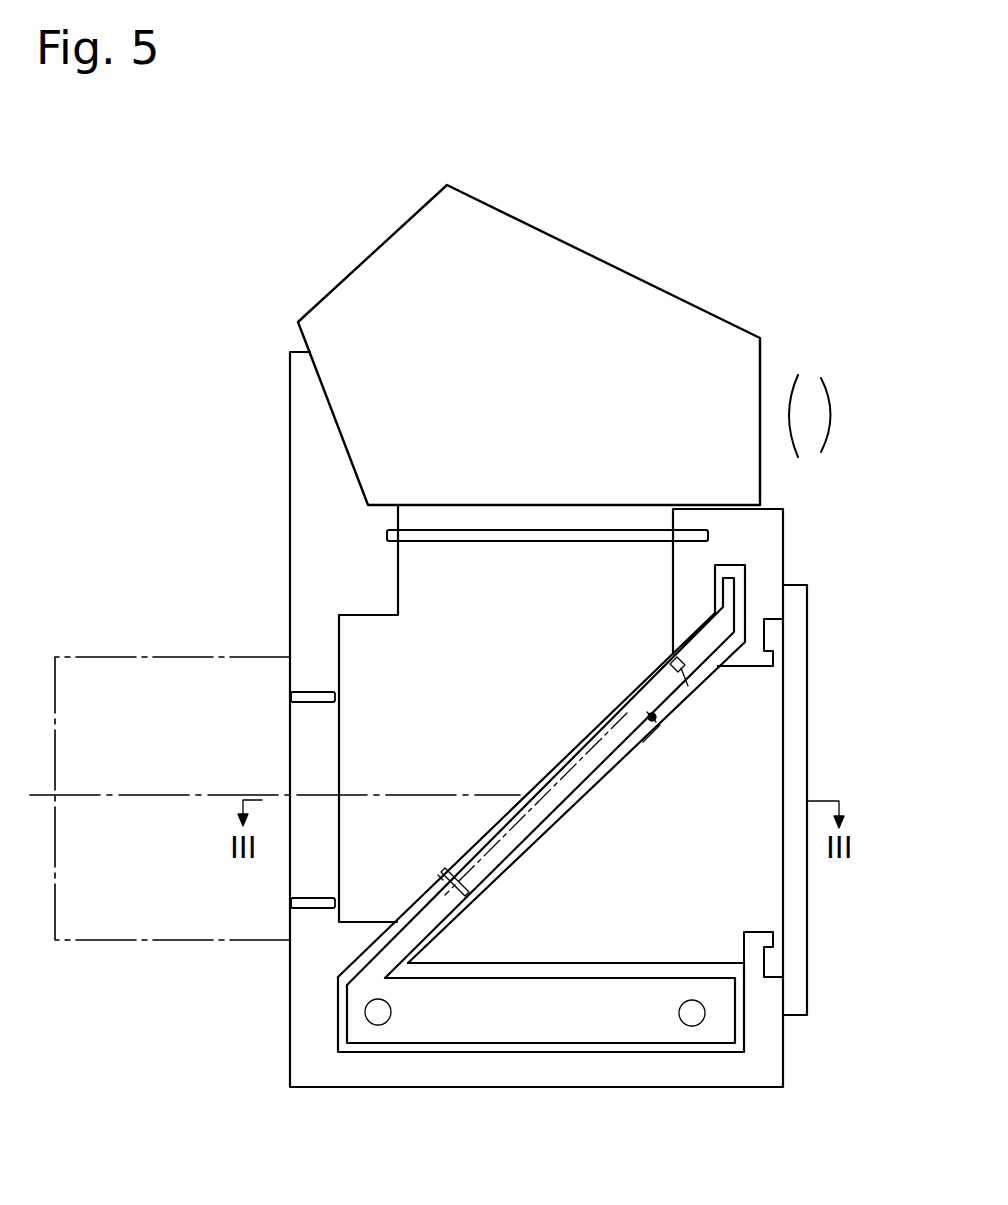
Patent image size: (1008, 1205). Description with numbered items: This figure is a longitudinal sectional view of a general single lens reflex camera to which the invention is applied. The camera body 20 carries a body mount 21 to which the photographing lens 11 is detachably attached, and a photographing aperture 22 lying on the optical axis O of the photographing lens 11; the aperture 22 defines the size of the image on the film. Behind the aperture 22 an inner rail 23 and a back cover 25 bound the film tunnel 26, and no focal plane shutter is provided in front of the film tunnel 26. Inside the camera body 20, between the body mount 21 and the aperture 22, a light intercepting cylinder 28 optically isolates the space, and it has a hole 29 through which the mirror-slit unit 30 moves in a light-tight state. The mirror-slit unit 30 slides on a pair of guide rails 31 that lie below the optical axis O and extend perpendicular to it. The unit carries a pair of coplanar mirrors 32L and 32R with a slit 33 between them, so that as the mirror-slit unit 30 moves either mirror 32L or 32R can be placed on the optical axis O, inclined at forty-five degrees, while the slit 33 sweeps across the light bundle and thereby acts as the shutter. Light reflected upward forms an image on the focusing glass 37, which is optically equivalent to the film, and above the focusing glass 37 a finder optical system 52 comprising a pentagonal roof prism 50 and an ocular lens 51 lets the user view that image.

The photographing lens 11 is at (160, 920).
The camera body 20 is at (297, 1050).
The body mount 21 is at (305, 700).
The photographing aperture 22 is at (764, 668).
The inner rail 23 is at (773, 658).
The back cover 25 is at (794, 777).
The film tunnel 26 is at (775, 928).
The light intercepting cylinder 28 is at (528, 930).
The hole 29 is at (653, 727).
The mirror-slit unit 30 is at (541, 847).
The guide rails 31 is at (378, 1014).
The mirror 32L is at (541, 769).
The mirror 32R is at (583, 750).
The slit 33 is at (475, 881).
The focusing glass 37 is at (572, 530).
The pentagonal roof prism 50 is at (683, 322).
The ocular lens 51 is at (840, 411).
The finder optical system 52 is at (597, 345).
The optical axis O is at (153, 790).